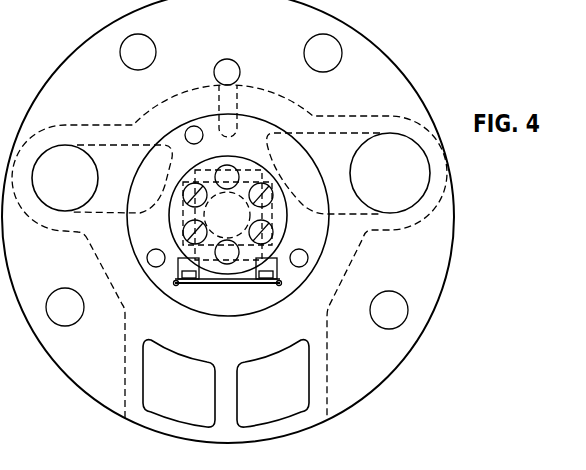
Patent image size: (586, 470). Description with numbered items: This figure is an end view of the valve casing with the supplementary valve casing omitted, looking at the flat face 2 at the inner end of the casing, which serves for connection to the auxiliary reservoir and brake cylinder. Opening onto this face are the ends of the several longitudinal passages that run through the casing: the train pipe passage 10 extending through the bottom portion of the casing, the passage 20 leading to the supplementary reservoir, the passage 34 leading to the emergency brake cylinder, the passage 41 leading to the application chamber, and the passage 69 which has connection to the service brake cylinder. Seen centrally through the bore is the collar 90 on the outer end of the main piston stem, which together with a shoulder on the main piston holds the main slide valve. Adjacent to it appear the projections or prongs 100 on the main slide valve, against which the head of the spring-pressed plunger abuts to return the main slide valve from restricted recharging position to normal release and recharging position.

The flat face 2 is at (404, 92).
The passage 10 is at (273, 383).
The longitudinal passage 20 is at (390, 173).
The longitudinal passage 34 is at (65, 178).
The longitudinal passage 41 is at (230, 71).
The longitudinal passage 69 is at (179, 383).
The collar 90 is at (282, 220).
The projections or prongs 100 is at (258, 272).